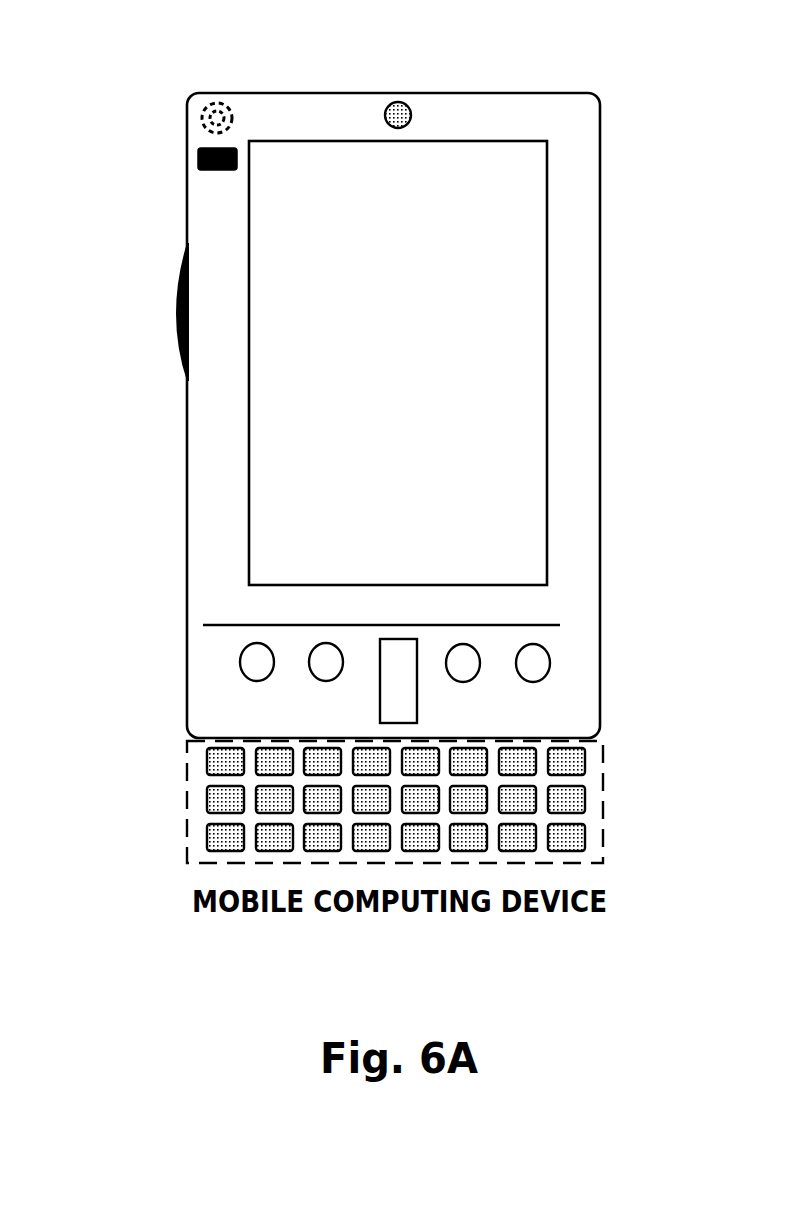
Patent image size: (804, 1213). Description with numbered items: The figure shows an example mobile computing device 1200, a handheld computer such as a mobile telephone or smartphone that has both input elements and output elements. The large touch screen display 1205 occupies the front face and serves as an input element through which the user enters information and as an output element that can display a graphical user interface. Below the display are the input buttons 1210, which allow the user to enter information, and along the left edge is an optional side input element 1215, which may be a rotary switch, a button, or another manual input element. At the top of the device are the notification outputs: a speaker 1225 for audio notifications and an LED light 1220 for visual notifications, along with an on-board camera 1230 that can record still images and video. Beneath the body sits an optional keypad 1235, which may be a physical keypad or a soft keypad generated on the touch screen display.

The mobile computing device 1200 is at (602, 108).
The touch screen display 1205 is at (273, 523).
The input buttons 1210 is at (537, 675).
The side input element 1215 is at (165, 319).
The LED light 1220 is at (200, 152).
The speaker 1225 is at (203, 110).
The on-board camera 1230 is at (410, 110).
The keypad 1235 is at (187, 832).